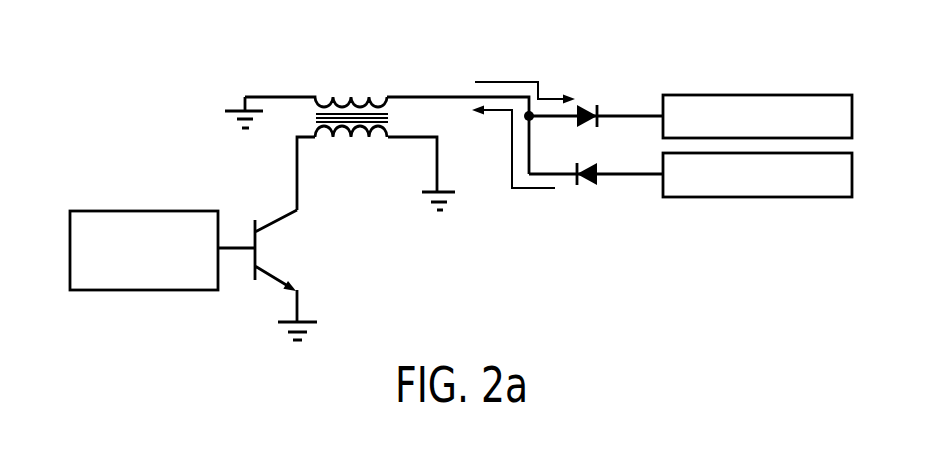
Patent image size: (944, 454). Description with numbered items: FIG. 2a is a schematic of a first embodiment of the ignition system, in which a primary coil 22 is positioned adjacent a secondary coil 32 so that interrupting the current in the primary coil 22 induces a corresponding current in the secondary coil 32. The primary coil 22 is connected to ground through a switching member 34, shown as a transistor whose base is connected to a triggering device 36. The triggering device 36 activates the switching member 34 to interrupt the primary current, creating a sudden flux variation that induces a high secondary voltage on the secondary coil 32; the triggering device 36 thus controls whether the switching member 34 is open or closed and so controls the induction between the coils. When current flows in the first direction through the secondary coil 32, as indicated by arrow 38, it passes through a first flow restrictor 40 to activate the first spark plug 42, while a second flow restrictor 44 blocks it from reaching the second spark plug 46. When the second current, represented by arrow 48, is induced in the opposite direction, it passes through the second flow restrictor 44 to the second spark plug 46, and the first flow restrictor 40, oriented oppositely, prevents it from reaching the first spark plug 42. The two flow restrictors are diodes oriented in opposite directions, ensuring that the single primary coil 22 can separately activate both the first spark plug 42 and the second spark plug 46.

The primary coil 22 is at (388, 128).
The secondary coil 32 is at (378, 98).
The switching member 34 is at (258, 257).
The triggering device 36 is at (142, 211).
The arrow 38 is at (532, 81).
The first flow restrictor 40 is at (598, 108).
The first spark plug 42 is at (757, 95).
The second flow restrictor 44 is at (595, 187).
The second spark plug 46 is at (757, 197).
The arrow 48 is at (510, 179).